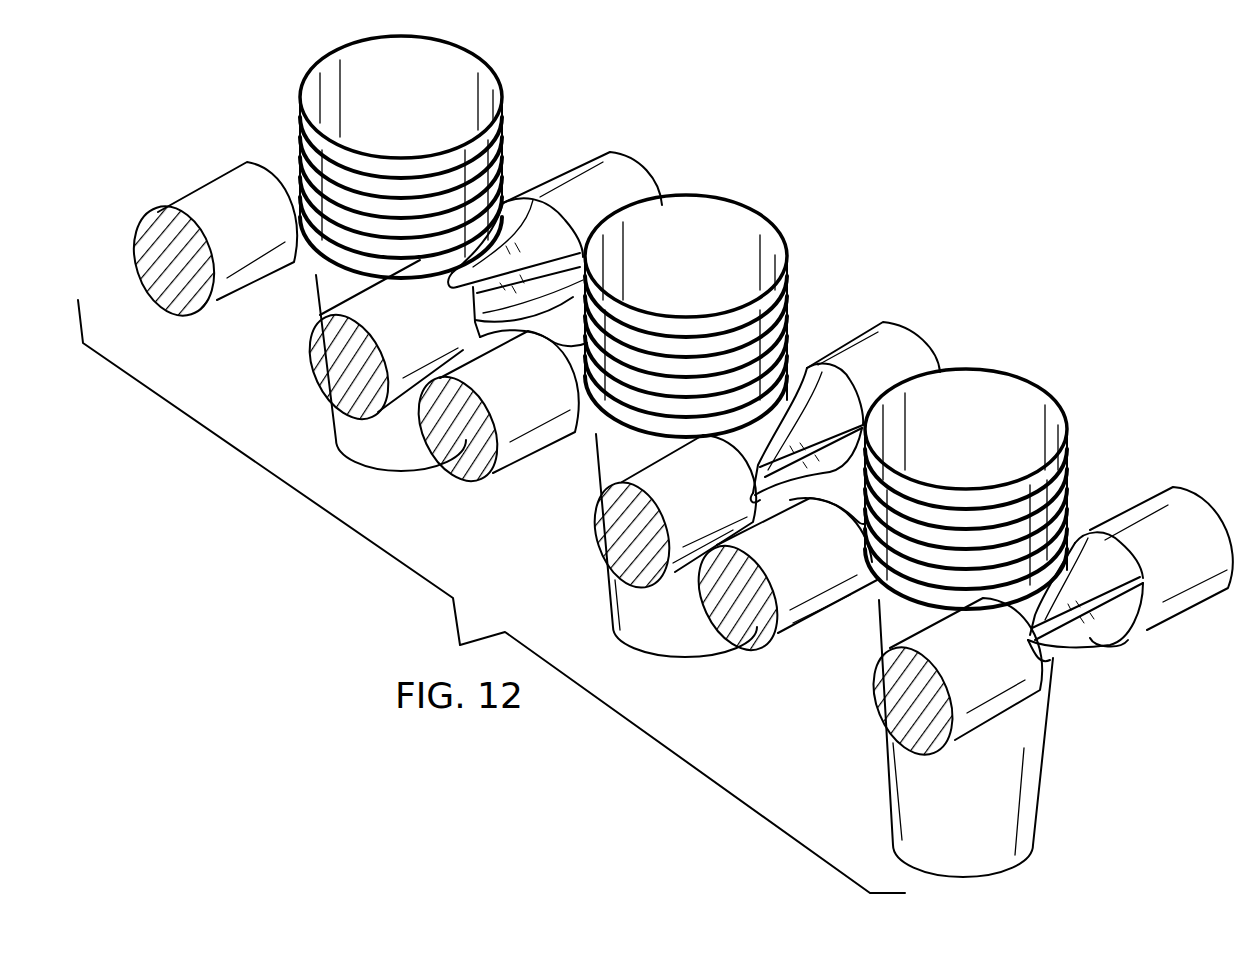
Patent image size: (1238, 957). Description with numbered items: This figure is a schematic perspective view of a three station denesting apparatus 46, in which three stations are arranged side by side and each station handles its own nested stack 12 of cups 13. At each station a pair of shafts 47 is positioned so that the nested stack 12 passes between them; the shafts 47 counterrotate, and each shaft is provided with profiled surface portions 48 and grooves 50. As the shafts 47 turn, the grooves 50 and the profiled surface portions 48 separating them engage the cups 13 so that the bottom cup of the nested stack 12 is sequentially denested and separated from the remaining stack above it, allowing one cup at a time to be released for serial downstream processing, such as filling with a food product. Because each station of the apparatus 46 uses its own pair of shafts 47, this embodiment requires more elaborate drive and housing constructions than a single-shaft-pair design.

The nested stack 12 is at (508, 97).
The cups 13 is at (975, 496).
The three station denesting apparatus 46 is at (857, 255).
The shafts 47 is at (318, 368).
The profiled surface portions 48 is at (540, 233).
The grooves 50 is at (468, 285).